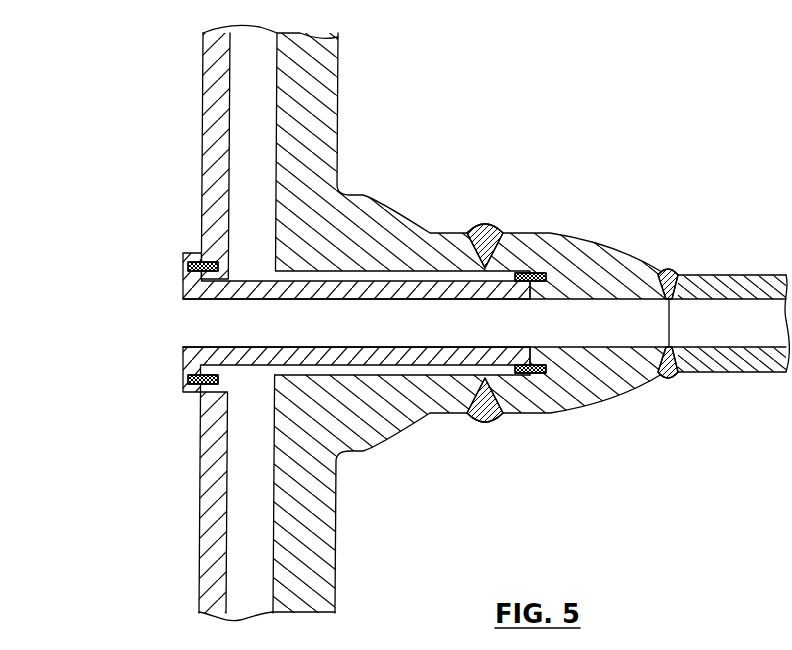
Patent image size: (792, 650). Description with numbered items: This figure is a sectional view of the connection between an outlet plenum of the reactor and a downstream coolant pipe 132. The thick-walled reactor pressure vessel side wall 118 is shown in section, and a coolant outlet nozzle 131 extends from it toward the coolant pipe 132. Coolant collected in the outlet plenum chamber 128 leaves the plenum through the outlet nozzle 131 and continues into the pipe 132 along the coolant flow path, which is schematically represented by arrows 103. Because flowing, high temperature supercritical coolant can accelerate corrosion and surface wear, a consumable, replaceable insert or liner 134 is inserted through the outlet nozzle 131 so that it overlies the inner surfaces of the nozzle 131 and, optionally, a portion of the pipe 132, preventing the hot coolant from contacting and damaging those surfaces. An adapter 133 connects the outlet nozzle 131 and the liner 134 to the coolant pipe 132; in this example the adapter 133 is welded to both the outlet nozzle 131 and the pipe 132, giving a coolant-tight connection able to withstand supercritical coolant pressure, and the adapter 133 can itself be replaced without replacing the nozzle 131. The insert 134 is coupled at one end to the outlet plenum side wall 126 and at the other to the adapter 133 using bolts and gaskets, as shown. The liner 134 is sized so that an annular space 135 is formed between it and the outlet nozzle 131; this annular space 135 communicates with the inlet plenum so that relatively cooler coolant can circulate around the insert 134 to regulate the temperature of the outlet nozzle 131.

The coolant flow path arrows 103 is at (195, 322).
The pressure vessel side wall 118 is at (401, 322).
The plenum side wall 126 is at (207, 543).
The outlet plenum chamber 128 is at (116, 187).
The coolant outlet nozzle 131 is at (393, 243).
The coolant pipe 132 is at (735, 277).
The adapter 133 is at (600, 252).
The insert or liner 134 is at (183, 278).
The annular space 135 is at (440, 368).